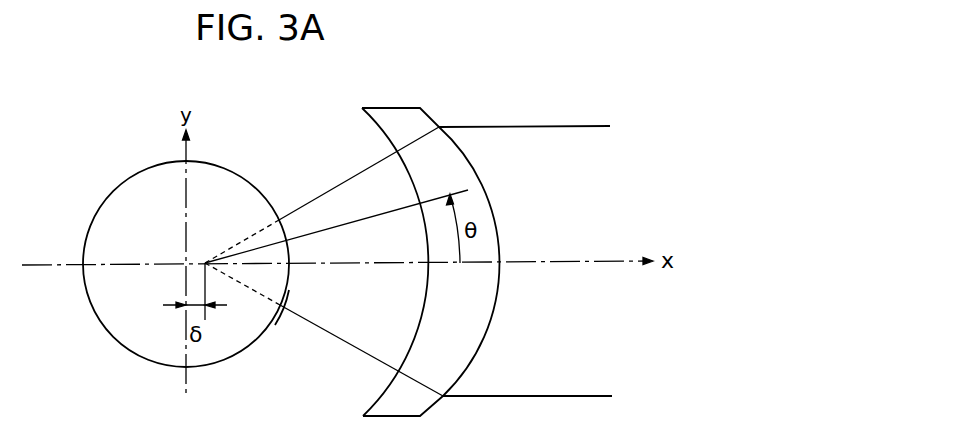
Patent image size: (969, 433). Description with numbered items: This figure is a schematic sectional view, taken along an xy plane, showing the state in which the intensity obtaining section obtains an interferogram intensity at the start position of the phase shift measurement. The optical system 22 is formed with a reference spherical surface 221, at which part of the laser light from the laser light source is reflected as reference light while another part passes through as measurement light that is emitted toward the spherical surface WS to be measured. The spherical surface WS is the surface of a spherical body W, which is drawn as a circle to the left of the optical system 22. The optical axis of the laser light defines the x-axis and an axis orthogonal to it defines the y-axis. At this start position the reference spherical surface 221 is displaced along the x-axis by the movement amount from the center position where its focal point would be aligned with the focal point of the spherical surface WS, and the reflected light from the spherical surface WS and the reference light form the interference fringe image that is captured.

The optical system 22 is at (452, 235).
The reference spherical surface 221 is at (377, 128).
The spherical body W is at (115, 340).
The spherical surface to be measured WS is at (289, 291).